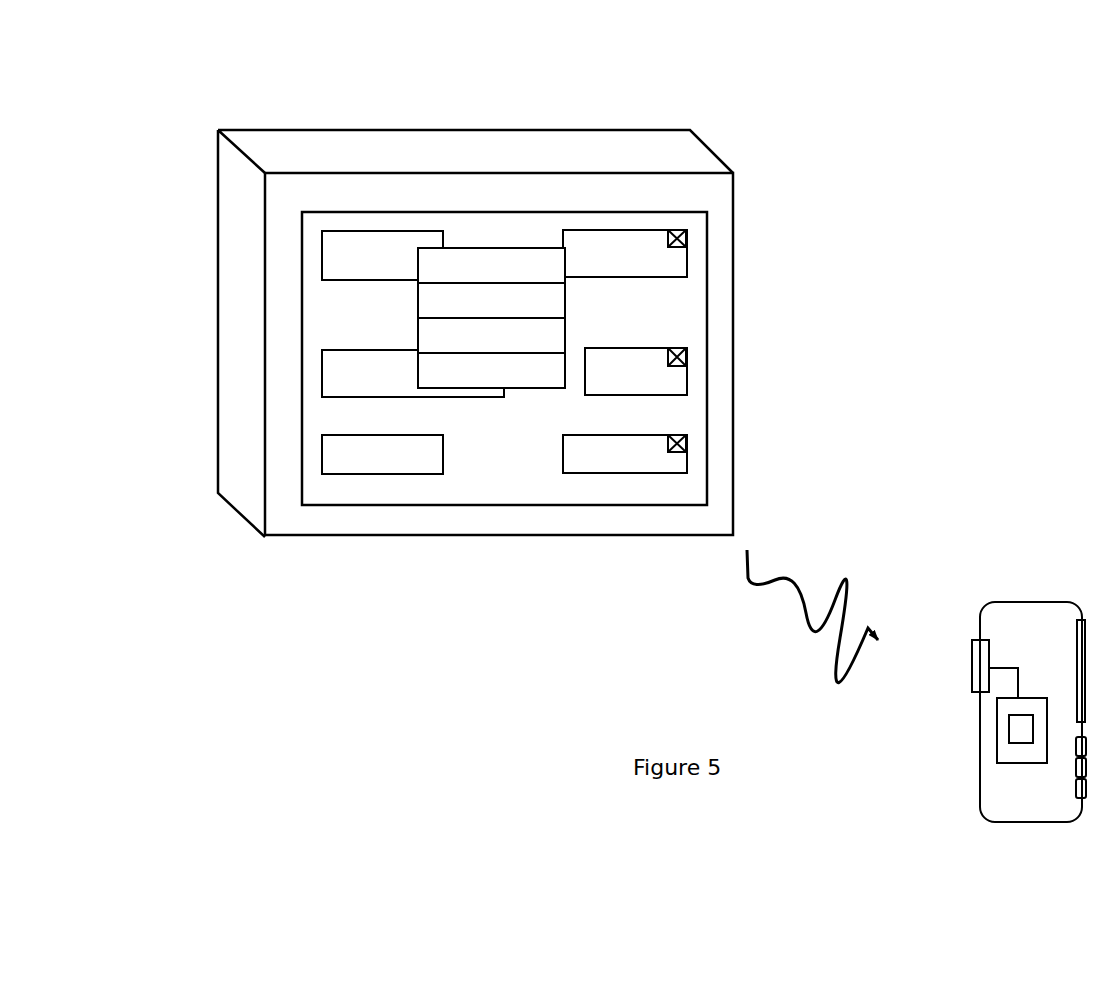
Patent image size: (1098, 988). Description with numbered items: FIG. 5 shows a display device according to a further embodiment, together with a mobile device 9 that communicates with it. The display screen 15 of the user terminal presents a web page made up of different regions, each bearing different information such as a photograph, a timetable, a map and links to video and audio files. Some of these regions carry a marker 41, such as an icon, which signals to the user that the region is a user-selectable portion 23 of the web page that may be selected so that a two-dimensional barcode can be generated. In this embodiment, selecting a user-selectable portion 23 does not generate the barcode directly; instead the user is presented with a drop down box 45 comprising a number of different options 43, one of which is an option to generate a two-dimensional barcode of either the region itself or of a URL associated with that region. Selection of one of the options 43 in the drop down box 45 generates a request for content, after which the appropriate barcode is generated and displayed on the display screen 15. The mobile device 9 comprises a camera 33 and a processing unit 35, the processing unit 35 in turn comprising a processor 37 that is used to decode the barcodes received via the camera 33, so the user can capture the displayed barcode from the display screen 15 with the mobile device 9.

The mobile device 9 is at (939, 664).
The display screen 15 is at (562, 285).
The user-selectable portion 23 is at (687, 370).
The camera 33 is at (980, 667).
The processing unit 35 is at (934, 626).
The processor 37 is at (1026, 735).
The marker 41 is at (688, 437).
The options 43 is at (416, 265).
The drop down box 45 is at (416, 211).